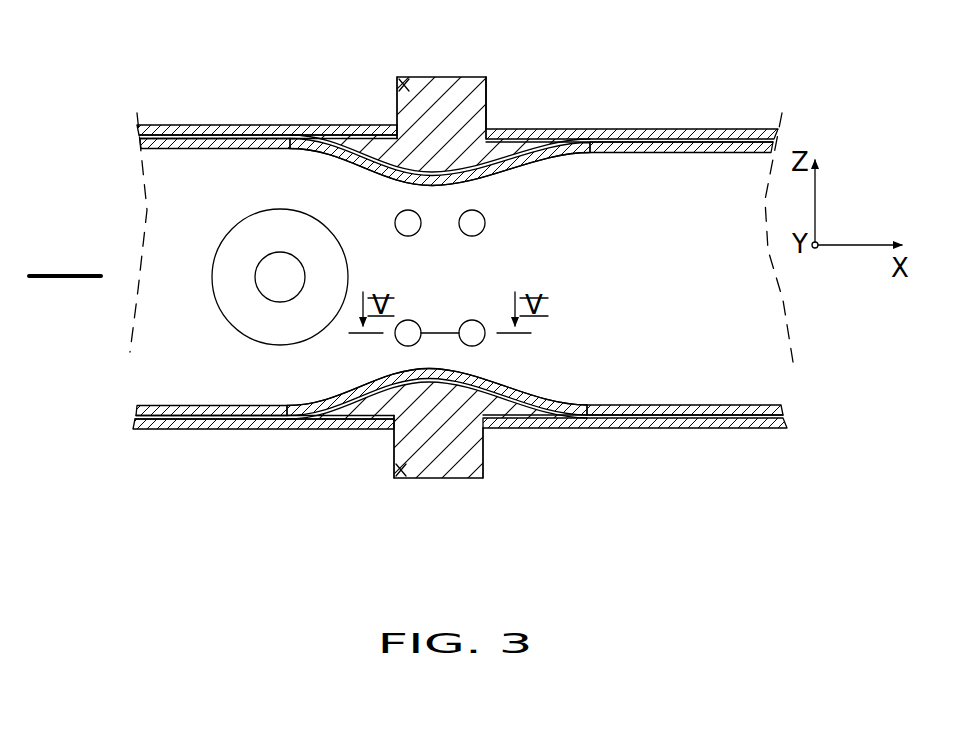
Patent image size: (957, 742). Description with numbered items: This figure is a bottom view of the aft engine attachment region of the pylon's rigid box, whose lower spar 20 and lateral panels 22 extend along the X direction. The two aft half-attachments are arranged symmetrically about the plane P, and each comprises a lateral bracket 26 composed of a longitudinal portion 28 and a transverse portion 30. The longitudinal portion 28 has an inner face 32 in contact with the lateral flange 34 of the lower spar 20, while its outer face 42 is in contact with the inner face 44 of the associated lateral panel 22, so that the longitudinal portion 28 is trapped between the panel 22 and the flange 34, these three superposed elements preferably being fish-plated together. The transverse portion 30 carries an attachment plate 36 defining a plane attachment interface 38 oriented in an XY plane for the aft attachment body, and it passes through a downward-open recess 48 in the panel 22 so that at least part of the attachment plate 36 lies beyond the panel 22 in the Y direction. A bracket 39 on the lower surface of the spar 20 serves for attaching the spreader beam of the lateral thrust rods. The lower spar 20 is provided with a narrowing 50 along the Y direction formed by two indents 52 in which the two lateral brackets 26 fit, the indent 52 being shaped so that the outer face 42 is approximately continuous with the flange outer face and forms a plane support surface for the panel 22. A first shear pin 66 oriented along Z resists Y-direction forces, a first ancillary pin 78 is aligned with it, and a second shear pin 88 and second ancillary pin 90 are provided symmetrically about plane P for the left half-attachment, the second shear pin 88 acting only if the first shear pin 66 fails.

The lower spar 20 is at (150, 222).
The lateral panel 22 is at (208, 130).
The lateral bracket 26 is at (488, 77).
The longitudinal portion 28 is at (343, 155).
The transverse portion 30 is at (450, 106).
The inner face 32 is at (536, 170).
The lateral flange 34 is at (215, 148).
The attachment plate 36 is at (396, 120).
The attachment interface 38 is at (399, 77).
The bracket 39 is at (214, 288).
The outer face 42 is at (550, 128).
The inner face 44 is at (600, 153).
The recess 48 is at (488, 132).
The narrowing 50 is at (459, 254).
The indent 52 is at (481, 175).
The first shear pin 66 is at (405, 320).
The first ancillary pin 78 is at (470, 320).
The second shear pin 88 is at (396, 220).
The second ancillary pin 90 is at (485, 231).
The plane P is at (72, 278).